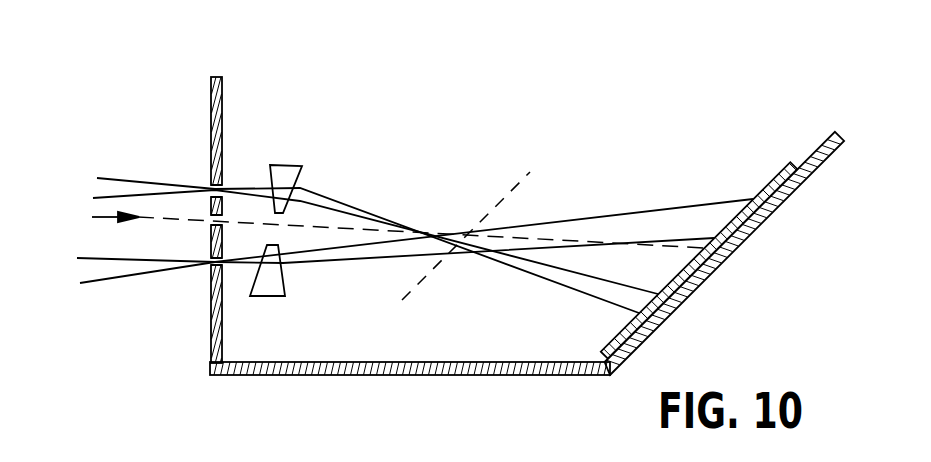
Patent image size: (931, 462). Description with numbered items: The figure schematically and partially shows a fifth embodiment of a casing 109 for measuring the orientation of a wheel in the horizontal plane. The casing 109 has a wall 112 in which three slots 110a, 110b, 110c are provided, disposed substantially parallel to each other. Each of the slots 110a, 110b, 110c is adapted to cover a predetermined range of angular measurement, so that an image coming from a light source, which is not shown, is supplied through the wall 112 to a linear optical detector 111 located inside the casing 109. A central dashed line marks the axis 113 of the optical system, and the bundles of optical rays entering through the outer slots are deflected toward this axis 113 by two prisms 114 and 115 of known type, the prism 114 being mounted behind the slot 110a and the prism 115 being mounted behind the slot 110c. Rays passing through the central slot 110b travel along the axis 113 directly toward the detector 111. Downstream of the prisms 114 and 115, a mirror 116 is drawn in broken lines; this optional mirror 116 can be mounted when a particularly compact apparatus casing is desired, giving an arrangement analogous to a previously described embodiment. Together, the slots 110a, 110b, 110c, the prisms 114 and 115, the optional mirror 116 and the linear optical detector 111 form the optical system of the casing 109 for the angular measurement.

The casing 109 is at (330, 405).
The slot 110a is at (208, 187).
The slot 110b is at (205, 213).
The slot 110c is at (208, 270).
The linear optical detector 111 is at (765, 192).
The wall 112 is at (208, 81).
The axis of the optical system 113 is at (113, 260).
The prism 114 is at (287, 170).
The prism 115 is at (268, 290).
The mirror 116 is at (510, 200).